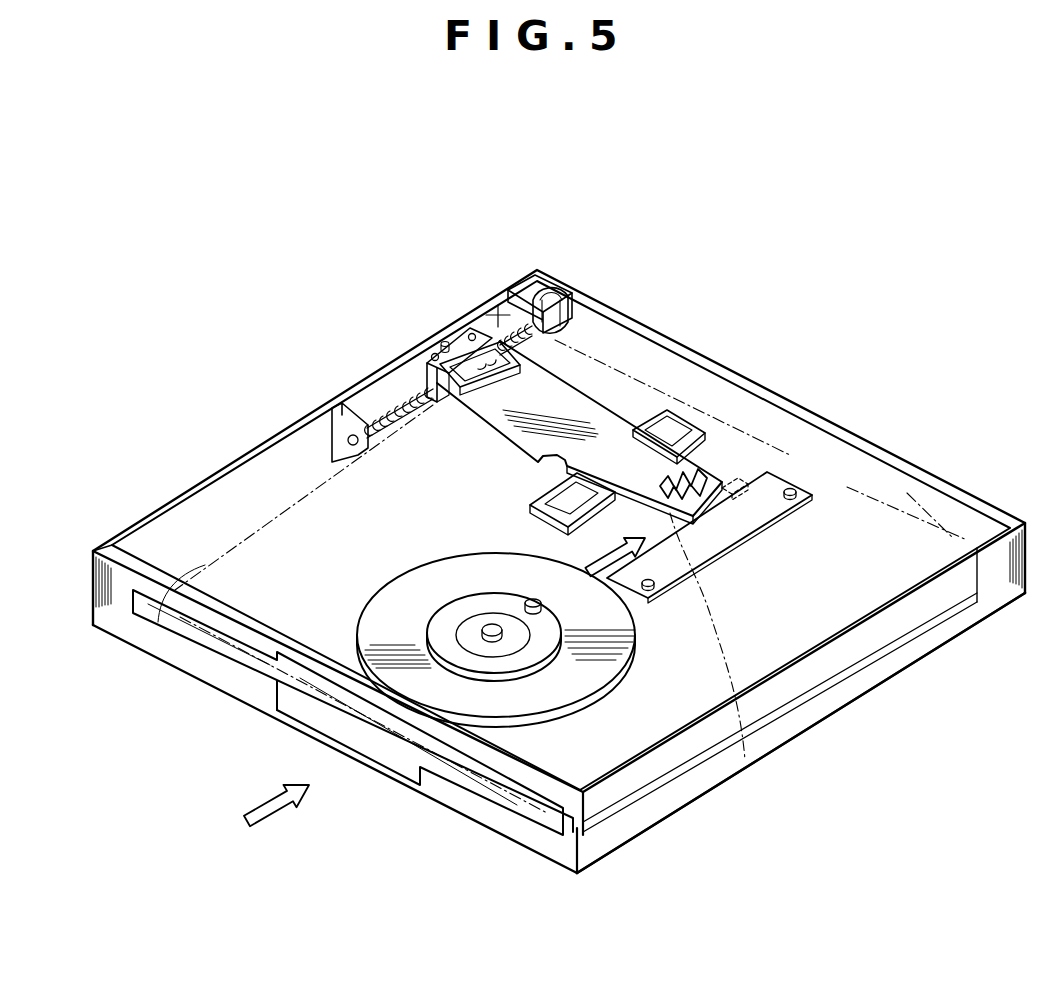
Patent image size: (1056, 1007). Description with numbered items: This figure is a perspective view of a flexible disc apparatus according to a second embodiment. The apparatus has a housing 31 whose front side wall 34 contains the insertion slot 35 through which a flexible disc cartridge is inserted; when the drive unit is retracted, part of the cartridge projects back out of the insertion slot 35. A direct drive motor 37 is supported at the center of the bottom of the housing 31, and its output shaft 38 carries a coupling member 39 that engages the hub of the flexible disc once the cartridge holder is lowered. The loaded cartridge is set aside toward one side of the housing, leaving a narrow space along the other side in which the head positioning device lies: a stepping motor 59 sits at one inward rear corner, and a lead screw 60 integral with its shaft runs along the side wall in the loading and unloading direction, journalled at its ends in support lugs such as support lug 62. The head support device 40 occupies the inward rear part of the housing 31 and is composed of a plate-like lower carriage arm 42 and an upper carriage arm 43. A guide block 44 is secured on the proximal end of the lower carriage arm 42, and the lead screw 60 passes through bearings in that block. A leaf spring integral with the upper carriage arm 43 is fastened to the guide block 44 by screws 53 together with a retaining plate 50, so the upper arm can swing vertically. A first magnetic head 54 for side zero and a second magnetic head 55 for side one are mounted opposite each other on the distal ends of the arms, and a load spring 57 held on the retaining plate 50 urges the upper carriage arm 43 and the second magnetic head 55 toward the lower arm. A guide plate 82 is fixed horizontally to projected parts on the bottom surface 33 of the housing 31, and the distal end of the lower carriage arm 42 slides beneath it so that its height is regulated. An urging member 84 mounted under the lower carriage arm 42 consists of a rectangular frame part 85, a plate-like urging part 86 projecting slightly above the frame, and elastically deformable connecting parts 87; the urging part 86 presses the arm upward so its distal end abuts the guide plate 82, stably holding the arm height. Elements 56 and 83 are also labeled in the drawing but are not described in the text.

The housing 31 is at (912, 448).
The bottom surface 33 is at (850, 700).
The front side wall 34 is at (103, 628).
The insertion slot 35 is at (280, 712).
The direct drive motor 37 is at (587, 657).
The output shaft 38 is at (528, 715).
The coupling member 39 is at (560, 640).
The head support device 40 is at (613, 380).
The lower carriage arm 42 is at (746, 765).
The upper carriage arm 43 is at (672, 360).
The guide block 44 is at (427, 376).
The retaining plate 50 is at (430, 330).
The screws 53 is at (428, 350).
The first magnetic head 54 is at (782, 452).
The second magnetic head 55 is at (745, 478).
The carriage guide 56 is at (470, 400).
The load spring 57 is at (500, 410).
The stepping motor 59 is at (572, 305).
The lead screw 60 is at (405, 440).
The support lug 62 is at (500, 312).
The guide plate 82 is at (800, 525).
The mounting screw 83 is at (796, 488).
The urging member 84 is at (700, 418).
The rectangular frame part 85 is at (548, 520).
The urging part 86 is at (668, 486).
The connecting parts 87 is at (605, 512).